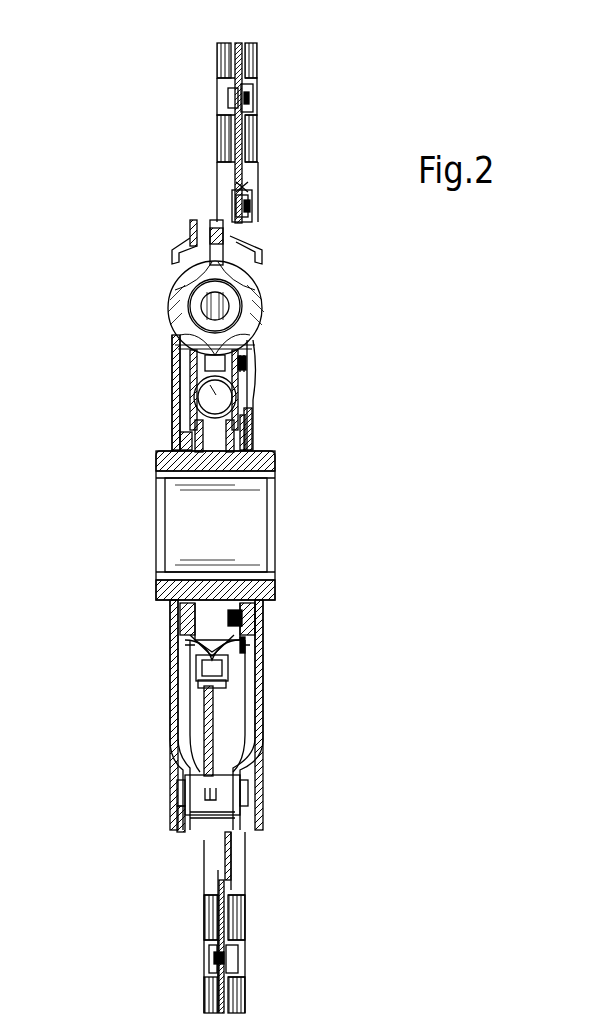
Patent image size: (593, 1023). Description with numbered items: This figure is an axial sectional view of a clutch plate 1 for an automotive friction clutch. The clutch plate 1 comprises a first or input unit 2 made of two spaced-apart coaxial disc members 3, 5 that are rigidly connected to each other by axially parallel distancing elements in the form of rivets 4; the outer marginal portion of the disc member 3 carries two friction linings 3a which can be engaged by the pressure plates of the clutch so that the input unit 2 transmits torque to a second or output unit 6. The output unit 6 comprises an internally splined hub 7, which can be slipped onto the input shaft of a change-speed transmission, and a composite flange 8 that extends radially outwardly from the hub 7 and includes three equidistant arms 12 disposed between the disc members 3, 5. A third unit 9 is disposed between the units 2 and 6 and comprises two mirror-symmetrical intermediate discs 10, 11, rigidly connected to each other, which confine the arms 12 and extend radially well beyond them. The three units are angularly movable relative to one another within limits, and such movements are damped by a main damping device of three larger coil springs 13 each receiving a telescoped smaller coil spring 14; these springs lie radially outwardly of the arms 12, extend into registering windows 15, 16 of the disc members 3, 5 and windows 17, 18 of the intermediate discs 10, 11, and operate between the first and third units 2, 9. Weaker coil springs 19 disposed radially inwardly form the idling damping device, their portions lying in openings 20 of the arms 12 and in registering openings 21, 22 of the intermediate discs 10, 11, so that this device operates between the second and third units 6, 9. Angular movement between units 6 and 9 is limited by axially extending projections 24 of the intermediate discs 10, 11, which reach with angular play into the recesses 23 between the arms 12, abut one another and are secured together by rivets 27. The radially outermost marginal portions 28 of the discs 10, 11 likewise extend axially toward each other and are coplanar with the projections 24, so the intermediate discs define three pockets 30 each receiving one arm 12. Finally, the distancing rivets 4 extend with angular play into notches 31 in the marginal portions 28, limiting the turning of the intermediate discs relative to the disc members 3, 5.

The clutch plate 1 is at (93, 210).
The first or input unit 2 is at (243, 188).
The disc member 3 is at (230, 852).
The friction linings 3a is at (256, 42).
The rivets 4 is at (206, 812).
The disc member 5 is at (180, 822).
The second or output unit 6 is at (172, 600).
The hub 7 is at (172, 458).
The composite flange 8 is at (198, 640).
The third unit 9 is at (240, 758).
The intermediate disc 10 is at (216, 718).
The intermediate disc 11 is at (205, 730).
The arms 12 is at (203, 360).
The larger coil springs 13 is at (252, 305).
The smaller coil springs 14 is at (231, 300).
The window 15 is at (250, 345).
The window 16 is at (178, 347).
The window 17 is at (228, 256).
The window 18 is at (210, 256).
The coil springs 19 is at (254, 404).
The openings 20 is at (212, 395).
The opening 21 is at (228, 383).
The opening 22 is at (196, 380).
The recesses 23 is at (235, 638).
The projections 24 is at (232, 655).
The rivets 27 is at (222, 676).
The marginal portions 28 is at (192, 218).
The pockets 30 is at (244, 365).
The notches 31 is at (243, 786).